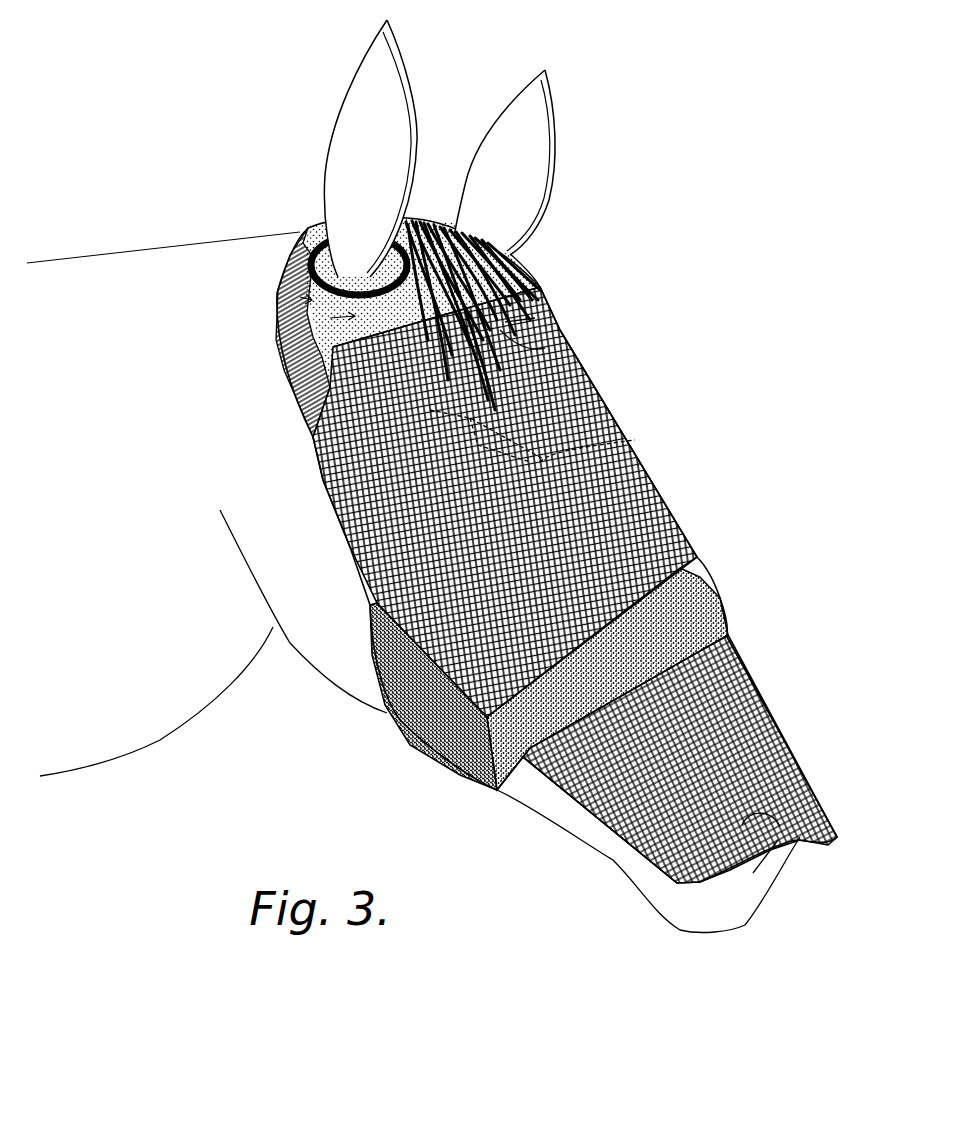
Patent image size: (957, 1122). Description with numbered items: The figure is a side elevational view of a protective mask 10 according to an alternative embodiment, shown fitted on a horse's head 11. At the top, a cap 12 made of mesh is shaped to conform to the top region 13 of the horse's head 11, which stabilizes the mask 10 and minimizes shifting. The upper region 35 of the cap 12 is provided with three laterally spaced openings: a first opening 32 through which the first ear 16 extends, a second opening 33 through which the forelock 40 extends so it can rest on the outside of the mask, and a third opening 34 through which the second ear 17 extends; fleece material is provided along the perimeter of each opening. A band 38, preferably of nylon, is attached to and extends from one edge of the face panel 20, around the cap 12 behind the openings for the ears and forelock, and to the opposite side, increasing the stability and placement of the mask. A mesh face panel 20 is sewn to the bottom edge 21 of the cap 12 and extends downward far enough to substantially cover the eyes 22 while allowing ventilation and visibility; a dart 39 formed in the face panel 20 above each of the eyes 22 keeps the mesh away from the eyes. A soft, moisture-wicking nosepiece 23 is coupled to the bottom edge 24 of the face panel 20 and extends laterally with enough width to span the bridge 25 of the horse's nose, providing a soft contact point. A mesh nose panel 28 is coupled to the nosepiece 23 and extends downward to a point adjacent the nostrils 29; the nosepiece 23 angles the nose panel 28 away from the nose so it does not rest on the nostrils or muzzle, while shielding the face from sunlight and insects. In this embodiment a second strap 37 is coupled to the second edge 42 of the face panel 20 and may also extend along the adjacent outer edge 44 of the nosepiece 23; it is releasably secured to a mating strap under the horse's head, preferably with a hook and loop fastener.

The protective mask 10 is at (622, 387).
The horse's head 11 is at (292, 643).
The cap region 12 is at (273, 300).
The top region 13 is at (292, 225).
The first ear 16 is at (347, 157).
The second ear 17 is at (557, 173).
The face panel 20 is at (657, 510).
The bottom edge 21 is at (527, 300).
The eyes 22 is at (630, 443).
The nosepiece 23 is at (713, 603).
The bottom edge 24 is at (697, 557).
The bridge 25 is at (567, 742).
The nose panel 28 is at (747, 697).
The nostrils 29 is at (787, 843).
The first opening 32 is at (322, 233).
The second opening 33 is at (415, 207).
The third opening 34 is at (510, 250).
The upper region 35 is at (283, 343).
The second strap 37 is at (400, 742).
The band 38 is at (200, 250).
The dart 39 is at (533, 345).
The forelock 40 is at (520, 320).
The second edge 42 is at (377, 672).
The outer edge 44 is at (493, 790).